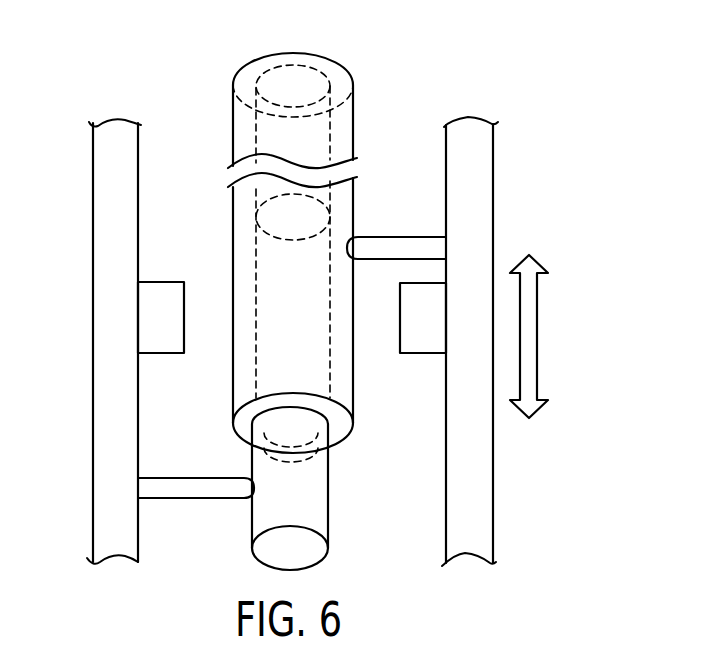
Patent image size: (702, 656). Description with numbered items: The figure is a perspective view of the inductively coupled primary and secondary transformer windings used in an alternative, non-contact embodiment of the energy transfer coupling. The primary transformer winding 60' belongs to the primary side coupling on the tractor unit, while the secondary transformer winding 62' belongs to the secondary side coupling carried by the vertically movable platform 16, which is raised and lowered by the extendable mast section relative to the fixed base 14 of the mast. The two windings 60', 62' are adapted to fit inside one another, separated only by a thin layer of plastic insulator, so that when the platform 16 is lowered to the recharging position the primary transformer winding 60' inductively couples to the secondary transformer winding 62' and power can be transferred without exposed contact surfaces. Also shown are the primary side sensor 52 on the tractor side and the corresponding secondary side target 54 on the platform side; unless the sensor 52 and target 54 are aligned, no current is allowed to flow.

The fixed base 14 is at (93, 220).
The vertically movable platform 16 is at (493, 207).
The primary side sensor 52 is at (172, 282).
The secondary side target 54 is at (417, 355).
The secondary transformer winding 62' is at (323, 253).
The primary transformer winding 60' is at (327, 488).